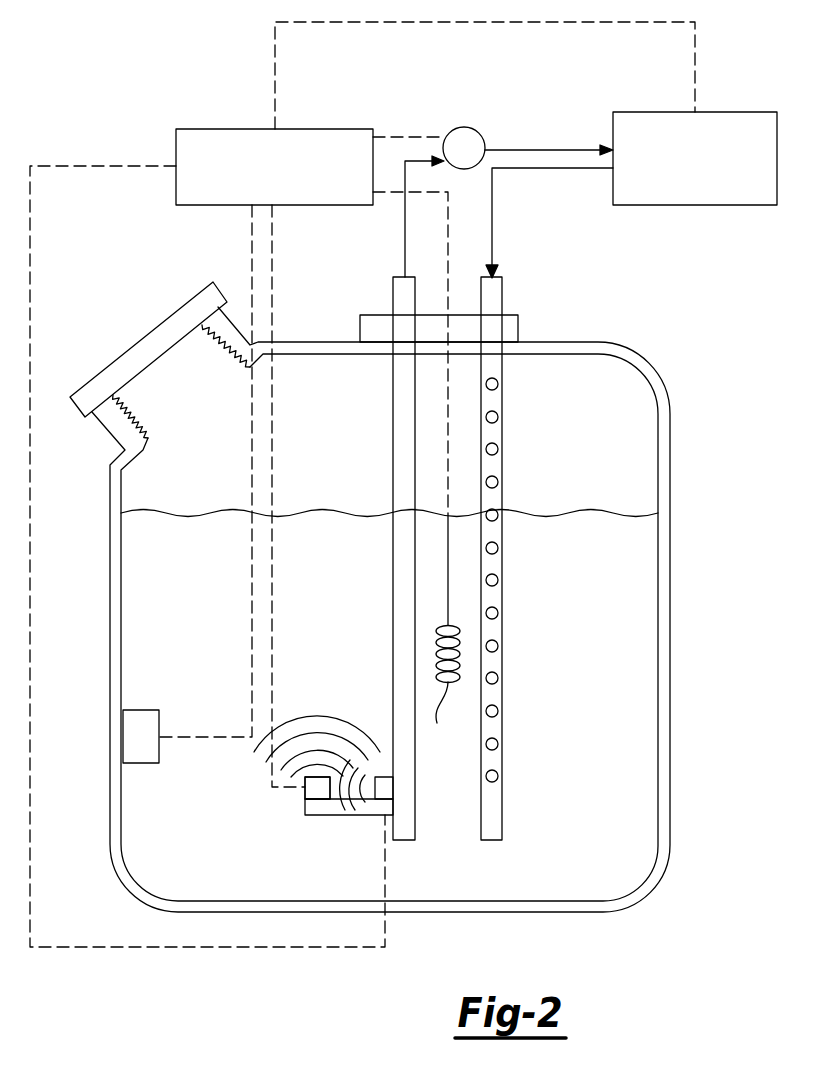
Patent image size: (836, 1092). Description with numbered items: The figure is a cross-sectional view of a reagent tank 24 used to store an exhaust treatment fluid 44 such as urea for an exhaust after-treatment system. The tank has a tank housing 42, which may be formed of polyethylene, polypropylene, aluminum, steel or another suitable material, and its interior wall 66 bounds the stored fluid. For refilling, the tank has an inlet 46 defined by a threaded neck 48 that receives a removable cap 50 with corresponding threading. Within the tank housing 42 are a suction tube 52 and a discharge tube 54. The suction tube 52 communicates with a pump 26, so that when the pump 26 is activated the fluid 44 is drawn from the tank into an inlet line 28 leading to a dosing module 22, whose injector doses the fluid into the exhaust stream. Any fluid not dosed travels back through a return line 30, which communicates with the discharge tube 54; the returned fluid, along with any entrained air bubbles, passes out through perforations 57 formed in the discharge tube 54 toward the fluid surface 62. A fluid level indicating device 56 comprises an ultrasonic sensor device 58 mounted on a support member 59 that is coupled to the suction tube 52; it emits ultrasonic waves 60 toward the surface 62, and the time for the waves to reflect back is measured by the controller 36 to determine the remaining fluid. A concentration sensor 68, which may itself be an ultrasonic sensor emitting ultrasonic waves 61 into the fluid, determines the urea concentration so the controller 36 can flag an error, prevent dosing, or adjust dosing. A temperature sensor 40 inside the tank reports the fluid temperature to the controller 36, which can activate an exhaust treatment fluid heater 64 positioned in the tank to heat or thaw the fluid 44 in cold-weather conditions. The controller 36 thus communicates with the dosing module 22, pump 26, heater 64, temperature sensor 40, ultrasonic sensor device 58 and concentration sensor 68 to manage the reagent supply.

The dosing module 22 is at (738, 206).
The reagent tank 24 is at (418, 609).
The pump 26 is at (471, 127).
The inlet line 28 is at (592, 146).
The return line 30 is at (571, 170).
The exhaust after-treatment system controller 36 is at (176, 152).
The temperature sensor 40 is at (137, 709).
The tank housing 42 is at (671, 573).
The exhaust treatment fluid 44 is at (178, 613).
The inlet 46 is at (150, 415).
The threaded neck 48 is at (207, 338).
The removable cap 50 is at (138, 343).
The suction tube 52 is at (392, 604).
The discharge tube 54 is at (503, 698).
The fluid level indicating device 56 is at (305, 793).
The perforations 57 is at (495, 615).
The ultrasonic sensor device 58 is at (254, 807).
The support member 59 is at (310, 816).
The ultrasonic waves 60 is at (315, 718).
The ultrasonic waves 61 is at (332, 792).
The surface 62 is at (208, 515).
The exhaust treatment fluid heater 64 is at (416, 475).
The interior wall 66 is at (657, 628).
The concentration sensor 68 is at (385, 777).